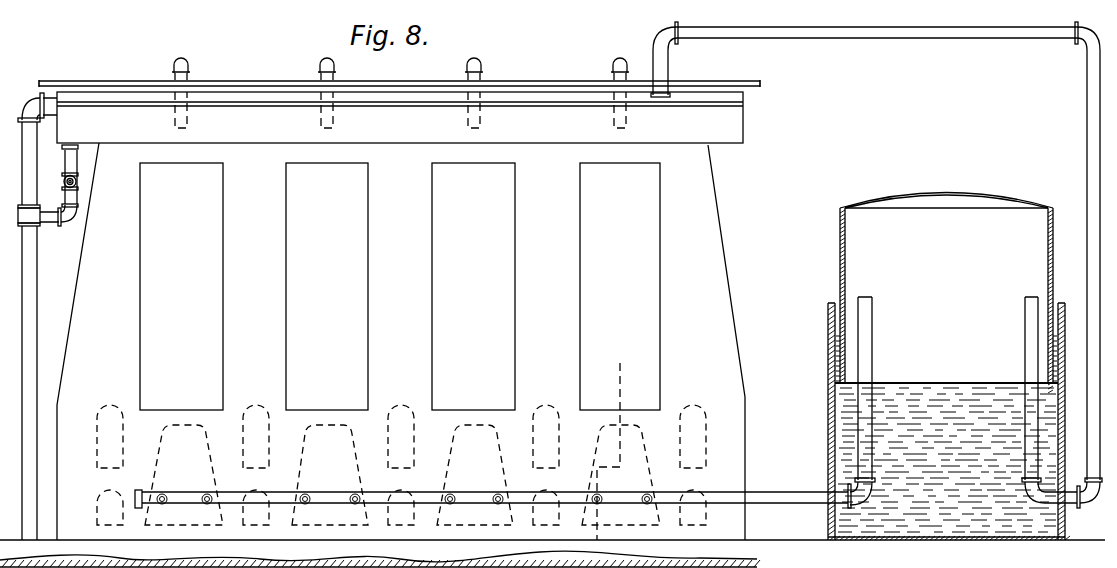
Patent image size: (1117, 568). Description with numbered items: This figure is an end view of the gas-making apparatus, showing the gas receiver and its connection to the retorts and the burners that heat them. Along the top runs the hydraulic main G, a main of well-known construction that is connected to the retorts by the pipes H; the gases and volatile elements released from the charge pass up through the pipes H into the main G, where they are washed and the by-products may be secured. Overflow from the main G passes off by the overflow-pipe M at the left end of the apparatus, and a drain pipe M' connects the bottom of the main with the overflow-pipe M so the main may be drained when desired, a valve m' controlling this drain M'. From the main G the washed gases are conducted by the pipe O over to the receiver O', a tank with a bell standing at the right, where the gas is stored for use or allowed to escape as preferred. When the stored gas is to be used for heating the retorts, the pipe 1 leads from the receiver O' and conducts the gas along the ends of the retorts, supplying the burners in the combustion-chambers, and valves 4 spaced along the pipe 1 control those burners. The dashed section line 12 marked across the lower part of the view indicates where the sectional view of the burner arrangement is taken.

The hydraulic main G is at (399, 111).
The pipes H is at (190, 67).
The pipe O is at (876, 265).
The receiver O' is at (949, 367).
The pipe 1 is at (771, 503).
The valves 4 is at (196, 514).
The section line 12 12 is at (611, 454).
The overflow-pipe M is at (28, 316).
The drain pipe M' is at (76, 185).
The valve m' is at (60, 174).